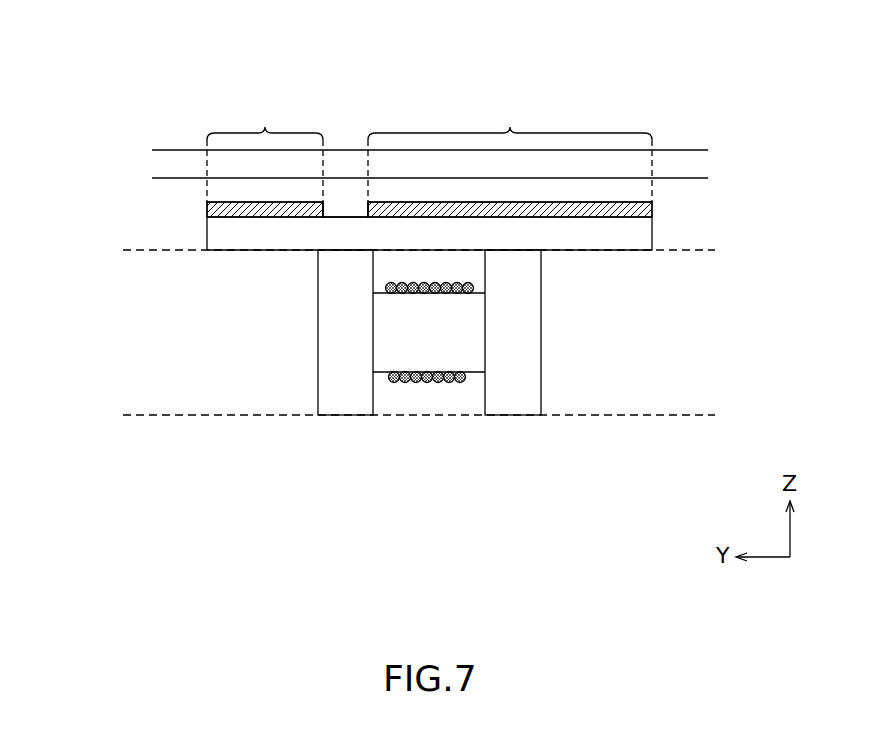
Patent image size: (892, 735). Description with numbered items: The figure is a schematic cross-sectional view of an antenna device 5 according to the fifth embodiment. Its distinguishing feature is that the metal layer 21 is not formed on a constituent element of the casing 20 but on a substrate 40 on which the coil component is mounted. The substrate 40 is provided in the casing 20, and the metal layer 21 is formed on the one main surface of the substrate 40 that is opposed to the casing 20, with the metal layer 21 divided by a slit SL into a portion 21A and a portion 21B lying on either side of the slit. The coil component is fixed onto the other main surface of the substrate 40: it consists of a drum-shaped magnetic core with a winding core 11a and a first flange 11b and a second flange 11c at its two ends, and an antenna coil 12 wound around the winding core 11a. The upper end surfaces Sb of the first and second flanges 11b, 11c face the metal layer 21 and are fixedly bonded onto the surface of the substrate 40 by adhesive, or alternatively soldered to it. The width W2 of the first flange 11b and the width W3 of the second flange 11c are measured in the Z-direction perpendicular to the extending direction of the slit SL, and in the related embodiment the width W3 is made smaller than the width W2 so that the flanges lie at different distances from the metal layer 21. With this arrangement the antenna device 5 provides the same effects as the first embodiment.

The antenna device 5 is at (549, 24).
The casing 20 is at (159, 163).
The metal layer 21 is at (205, 209).
The first portion of conductive layer 21A is at (265, 150).
The second portion of conductive layer 21B is at (510, 148).
The slit SL is at (345, 205).
The substrate 40 is at (206, 233).
The upper end surface Sb is at (347, 237).
The first flange 11b is at (318, 333).
The second flange 11c is at (541, 333).
The winding core 11a is at (403, 347).
The antenna coil 12 is at (430, 383).
The width of the first flange W2 is at (151, 252).
The width of the second flange W3 is at (708, 252).